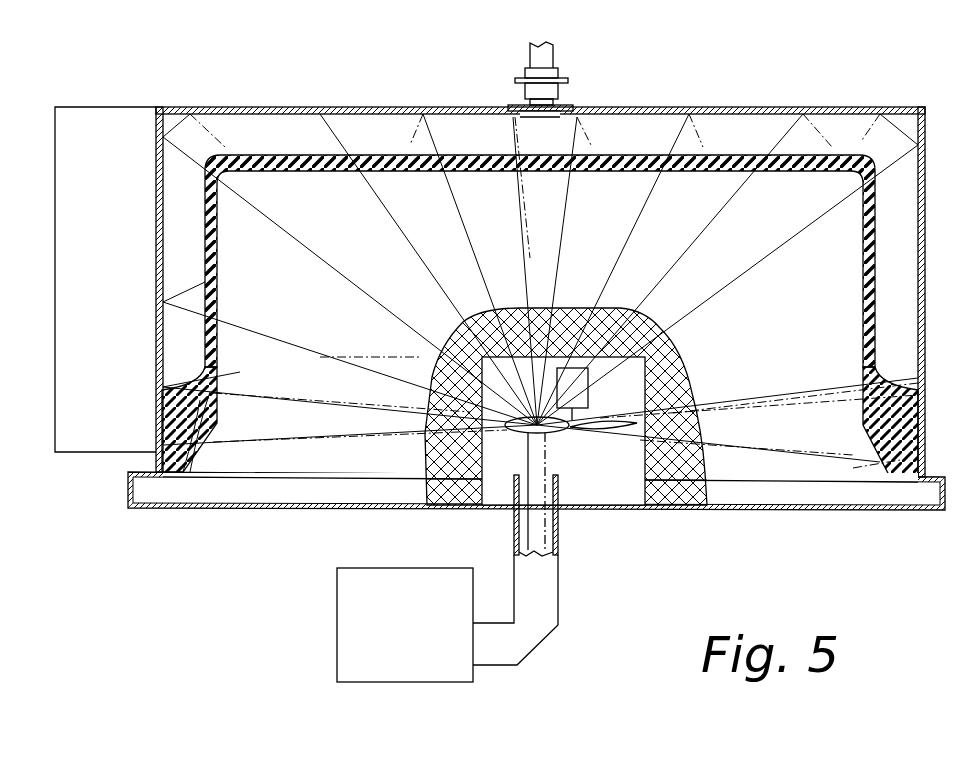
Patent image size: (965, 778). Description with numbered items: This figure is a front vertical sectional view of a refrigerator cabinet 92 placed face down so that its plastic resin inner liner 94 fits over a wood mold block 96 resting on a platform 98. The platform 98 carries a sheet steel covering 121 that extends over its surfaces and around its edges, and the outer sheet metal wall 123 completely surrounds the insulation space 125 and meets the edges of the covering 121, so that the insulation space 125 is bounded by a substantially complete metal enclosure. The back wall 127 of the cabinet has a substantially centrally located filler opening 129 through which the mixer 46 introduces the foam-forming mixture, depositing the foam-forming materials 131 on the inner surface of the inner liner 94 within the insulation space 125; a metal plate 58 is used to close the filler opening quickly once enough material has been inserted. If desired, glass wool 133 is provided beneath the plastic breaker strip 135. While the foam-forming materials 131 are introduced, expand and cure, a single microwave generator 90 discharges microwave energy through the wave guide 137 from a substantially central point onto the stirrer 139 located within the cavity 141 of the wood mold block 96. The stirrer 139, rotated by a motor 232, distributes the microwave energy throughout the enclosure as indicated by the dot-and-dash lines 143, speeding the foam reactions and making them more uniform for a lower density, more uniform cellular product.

The mixer 46 is at (553, 52).
The metal plate 58 is at (510, 105).
The microwave generator 90 is at (337, 642).
The refrigerator cabinet 92 is at (253, 107).
The plastic resin inner liner 94 is at (295, 172).
The wood mold block 96 is at (473, 463).
The platform 98 is at (257, 505).
The sheet steel covering 121 is at (775, 510).
The outer sheet metal wall 123 is at (843, 110).
The insulation space 125 is at (740, 130).
The back wall 127 is at (438, 107).
The filler opening 129 is at (542, 114).
The foam-forming materials 131 is at (628, 165).
The glass wool 133 is at (210, 412).
The plastic breaker strip 135 is at (200, 455).
The wave guide 137 is at (547, 595).
The stirrer 139 is at (553, 430).
The cavity 141 is at (645, 482).
The dot-and-dash lines 143 is at (815, 222).
The motor 232 is at (585, 393).